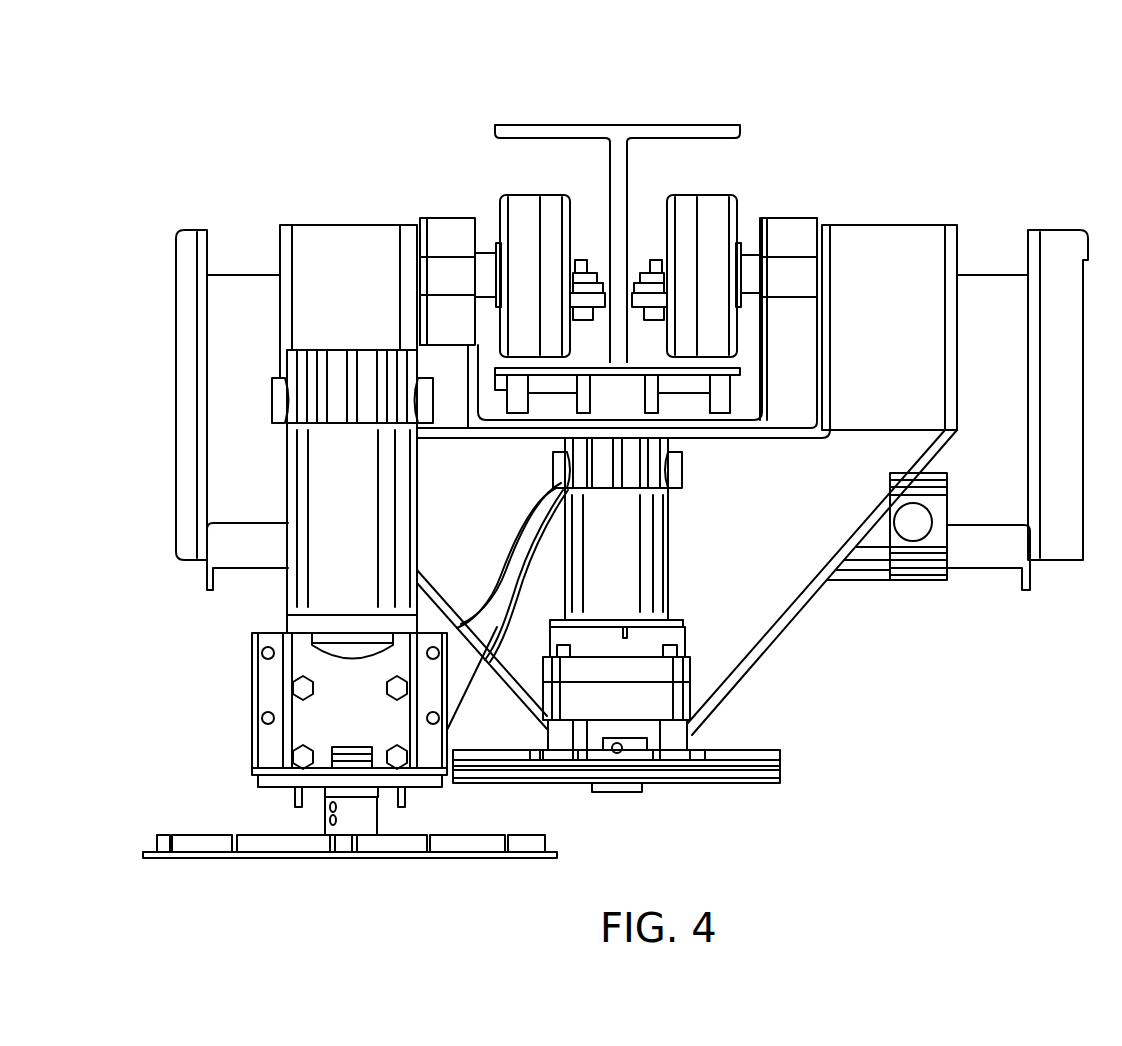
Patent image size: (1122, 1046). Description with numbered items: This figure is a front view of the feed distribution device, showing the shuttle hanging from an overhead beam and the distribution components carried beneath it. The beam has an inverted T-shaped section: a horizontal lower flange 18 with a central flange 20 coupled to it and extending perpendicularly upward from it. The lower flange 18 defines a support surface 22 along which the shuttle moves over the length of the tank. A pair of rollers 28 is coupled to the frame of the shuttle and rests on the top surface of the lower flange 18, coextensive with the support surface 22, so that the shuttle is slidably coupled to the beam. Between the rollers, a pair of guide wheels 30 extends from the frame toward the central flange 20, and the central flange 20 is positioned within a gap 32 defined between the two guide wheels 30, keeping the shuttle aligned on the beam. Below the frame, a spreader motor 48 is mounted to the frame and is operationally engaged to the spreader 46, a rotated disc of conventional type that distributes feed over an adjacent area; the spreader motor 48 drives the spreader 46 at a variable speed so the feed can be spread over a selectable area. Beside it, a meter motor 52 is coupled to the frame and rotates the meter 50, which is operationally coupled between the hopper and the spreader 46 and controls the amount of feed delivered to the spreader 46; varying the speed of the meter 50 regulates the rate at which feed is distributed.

The lower flange 18 is at (498, 365).
The central flange 20 is at (607, 165).
The support surface 22 is at (660, 86).
The rollers 28 is at (507, 197).
The guide wheels 30 is at (602, 297).
The gap 32 is at (602, 232).
The spreader 46 is at (150, 838).
The spreader motor 48 is at (312, 578).
The meter 50 is at (780, 763).
The meter motor 52 is at (660, 548).